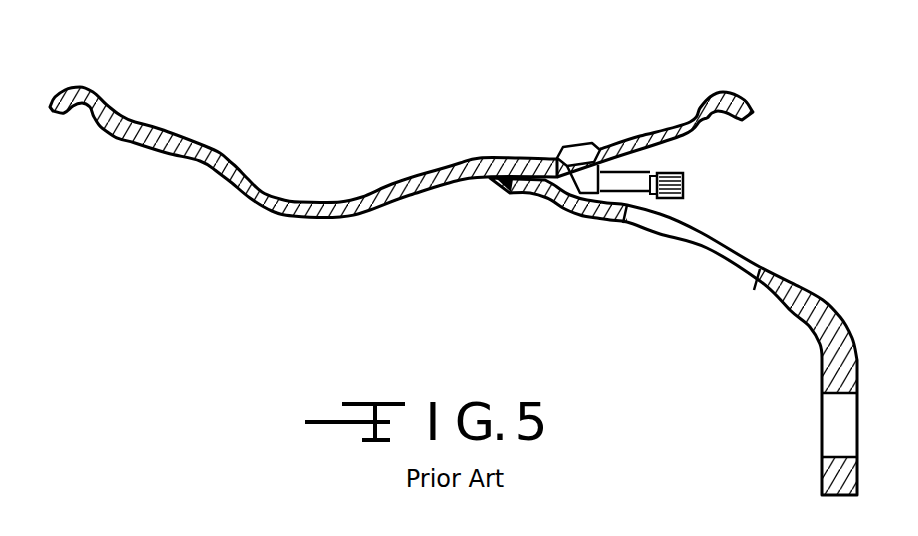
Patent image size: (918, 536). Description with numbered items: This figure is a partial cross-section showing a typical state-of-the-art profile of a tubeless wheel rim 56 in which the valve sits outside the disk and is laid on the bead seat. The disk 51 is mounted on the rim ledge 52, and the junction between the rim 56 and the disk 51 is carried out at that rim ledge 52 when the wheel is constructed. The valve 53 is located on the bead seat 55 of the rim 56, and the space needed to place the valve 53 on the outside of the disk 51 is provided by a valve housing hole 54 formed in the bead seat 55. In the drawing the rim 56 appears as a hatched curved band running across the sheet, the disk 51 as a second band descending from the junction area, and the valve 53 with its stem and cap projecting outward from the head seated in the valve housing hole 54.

The disk 51 is at (830, 362).
The rim ledge 52 is at (512, 163).
The valve 53 is at (580, 187).
The valve housing hole 54 is at (580, 148).
The bead seat 55 is at (633, 142).
The tubeless wheel rim 56 is at (355, 157).